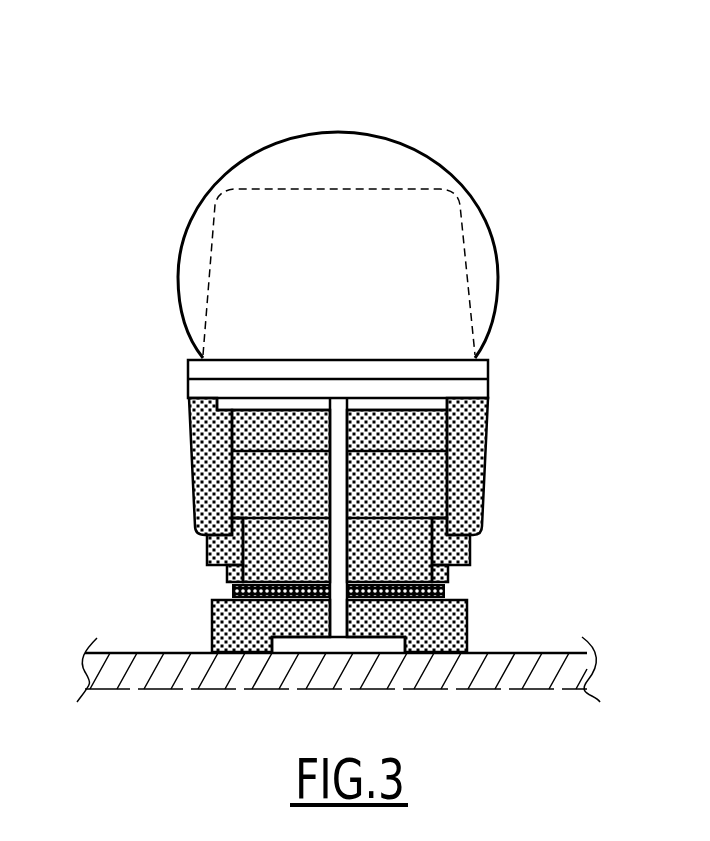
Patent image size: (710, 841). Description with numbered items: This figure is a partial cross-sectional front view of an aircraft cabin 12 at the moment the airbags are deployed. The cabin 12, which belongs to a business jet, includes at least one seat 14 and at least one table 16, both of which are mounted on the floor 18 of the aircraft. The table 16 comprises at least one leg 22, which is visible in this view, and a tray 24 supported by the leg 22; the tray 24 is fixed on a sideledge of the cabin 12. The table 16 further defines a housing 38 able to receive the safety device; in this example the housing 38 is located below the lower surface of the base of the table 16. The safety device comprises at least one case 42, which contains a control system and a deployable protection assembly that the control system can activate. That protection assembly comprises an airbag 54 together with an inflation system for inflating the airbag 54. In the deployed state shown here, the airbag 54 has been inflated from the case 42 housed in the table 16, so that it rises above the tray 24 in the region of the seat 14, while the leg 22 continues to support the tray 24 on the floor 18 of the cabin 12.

The cabin 12 is at (364, 336).
The seat 14 is at (207, 488).
The table 16 is at (152, 343).
The floor 18 is at (528, 652).
The leg 22 is at (305, 610).
The tray 24 is at (512, 344).
The housing 38 is at (420, 410).
The case 42 is at (450, 404).
The airbag 54 is at (384, 158).